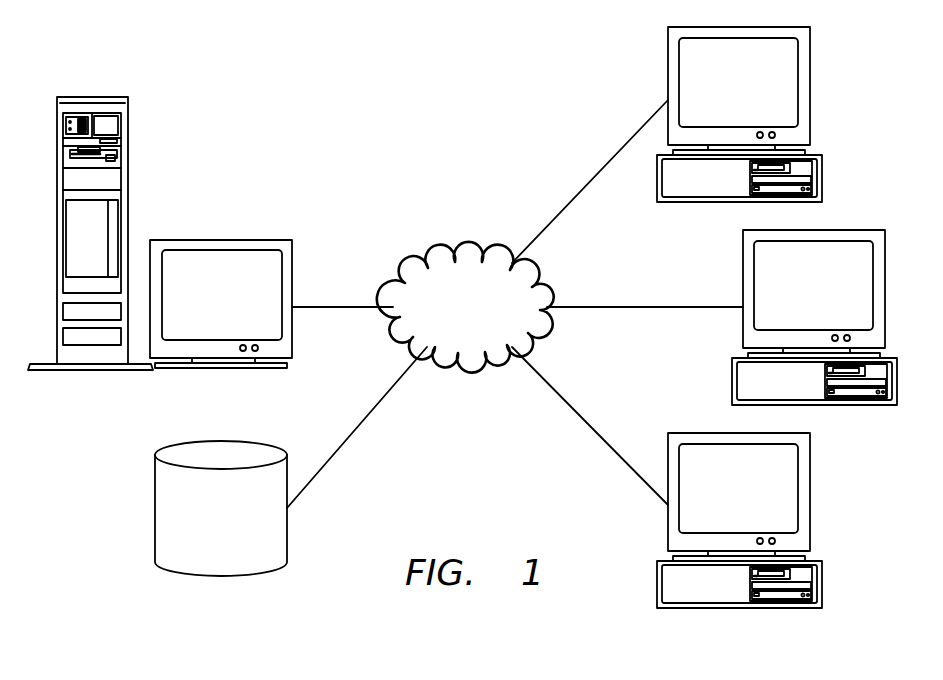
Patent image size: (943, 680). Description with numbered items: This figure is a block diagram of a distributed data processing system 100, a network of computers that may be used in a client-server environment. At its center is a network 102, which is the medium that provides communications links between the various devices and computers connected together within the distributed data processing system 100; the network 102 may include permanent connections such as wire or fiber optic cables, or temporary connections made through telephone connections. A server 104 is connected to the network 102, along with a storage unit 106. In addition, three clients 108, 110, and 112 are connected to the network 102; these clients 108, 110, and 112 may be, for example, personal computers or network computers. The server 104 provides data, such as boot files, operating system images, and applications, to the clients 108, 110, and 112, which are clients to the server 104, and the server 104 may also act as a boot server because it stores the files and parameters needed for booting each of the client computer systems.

The distributed data processing system 100 is at (363, 68).
The network 102 is at (450, 320).
The server 104 is at (202, 305).
The storage unit 106 is at (202, 532).
The client 108 is at (720, 97).
The client 110 is at (795, 301).
The client 112 is at (720, 503).